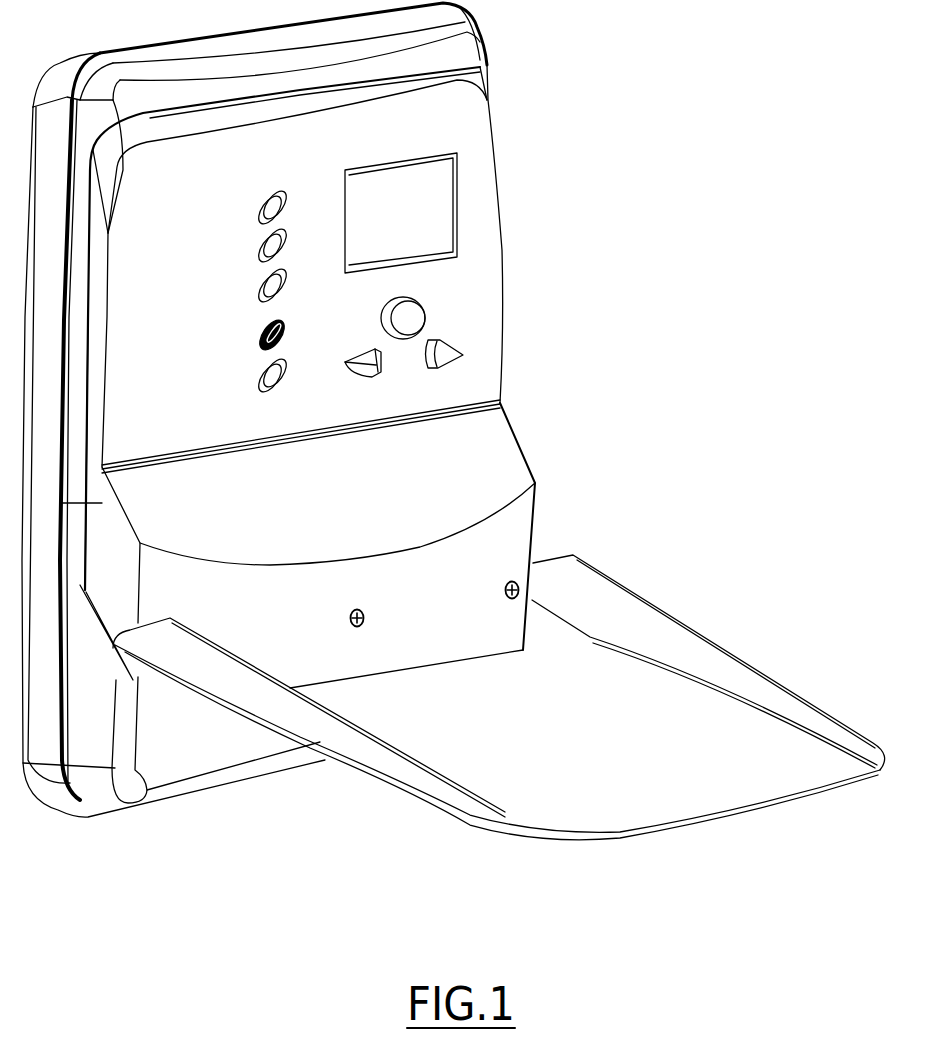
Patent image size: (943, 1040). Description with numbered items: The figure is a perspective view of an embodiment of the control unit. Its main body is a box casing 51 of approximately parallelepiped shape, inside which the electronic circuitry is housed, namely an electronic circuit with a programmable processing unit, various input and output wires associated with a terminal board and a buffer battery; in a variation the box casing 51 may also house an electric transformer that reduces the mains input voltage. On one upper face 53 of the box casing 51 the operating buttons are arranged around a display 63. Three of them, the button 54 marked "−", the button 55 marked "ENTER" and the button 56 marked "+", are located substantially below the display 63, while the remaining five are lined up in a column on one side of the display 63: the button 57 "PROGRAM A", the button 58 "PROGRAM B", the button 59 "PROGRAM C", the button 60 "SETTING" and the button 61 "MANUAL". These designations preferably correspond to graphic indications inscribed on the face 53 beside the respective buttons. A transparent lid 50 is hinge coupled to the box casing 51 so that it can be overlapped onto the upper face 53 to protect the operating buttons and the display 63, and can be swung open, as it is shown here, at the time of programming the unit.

The transparent lid 50 is at (695, 662).
The box casing 51 is at (503, 217).
The upper face 53 is at (163, 322).
The button "−" 54 is at (348, 362).
The button "ENTER" 55 is at (410, 316).
The button "+" 56 is at (457, 357).
The button "PROGRAM A" 57 is at (266, 204).
The button "PROGRAM B" 58 is at (264, 250).
The button "PROGRAM C" 59 is at (258, 295).
The button "SETTING" 60 is at (260, 336).
The button "MANUAL" 61 is at (256, 382).
The display 63 is at (418, 228).